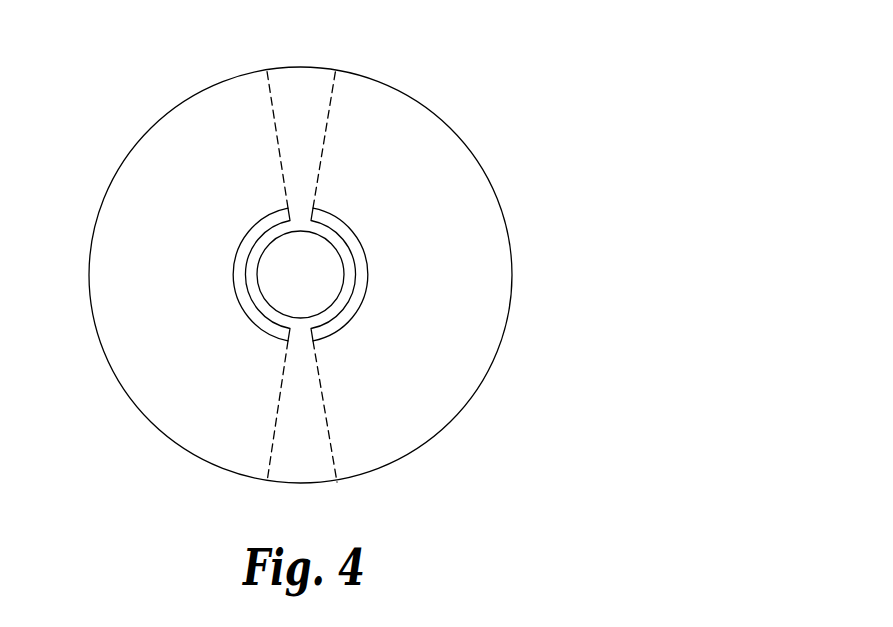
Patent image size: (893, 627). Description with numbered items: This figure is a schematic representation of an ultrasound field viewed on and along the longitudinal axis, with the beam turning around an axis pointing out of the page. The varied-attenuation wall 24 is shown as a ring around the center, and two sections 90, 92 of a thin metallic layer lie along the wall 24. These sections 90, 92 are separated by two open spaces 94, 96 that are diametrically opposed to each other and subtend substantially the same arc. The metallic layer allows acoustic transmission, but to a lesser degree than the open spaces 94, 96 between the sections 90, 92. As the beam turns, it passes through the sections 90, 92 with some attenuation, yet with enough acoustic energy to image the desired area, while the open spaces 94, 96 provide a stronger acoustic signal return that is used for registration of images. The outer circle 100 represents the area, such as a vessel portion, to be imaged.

The outer circle 100 is at (157, 118).
The varied-attenuation wall 24 is at (363, 243).
The section of thin metallic layer 90 is at (350, 303).
The section of thin metallic layer 92 is at (248, 302).
The open portion 94 is at (302, 220).
The open portion 96 is at (301, 330).